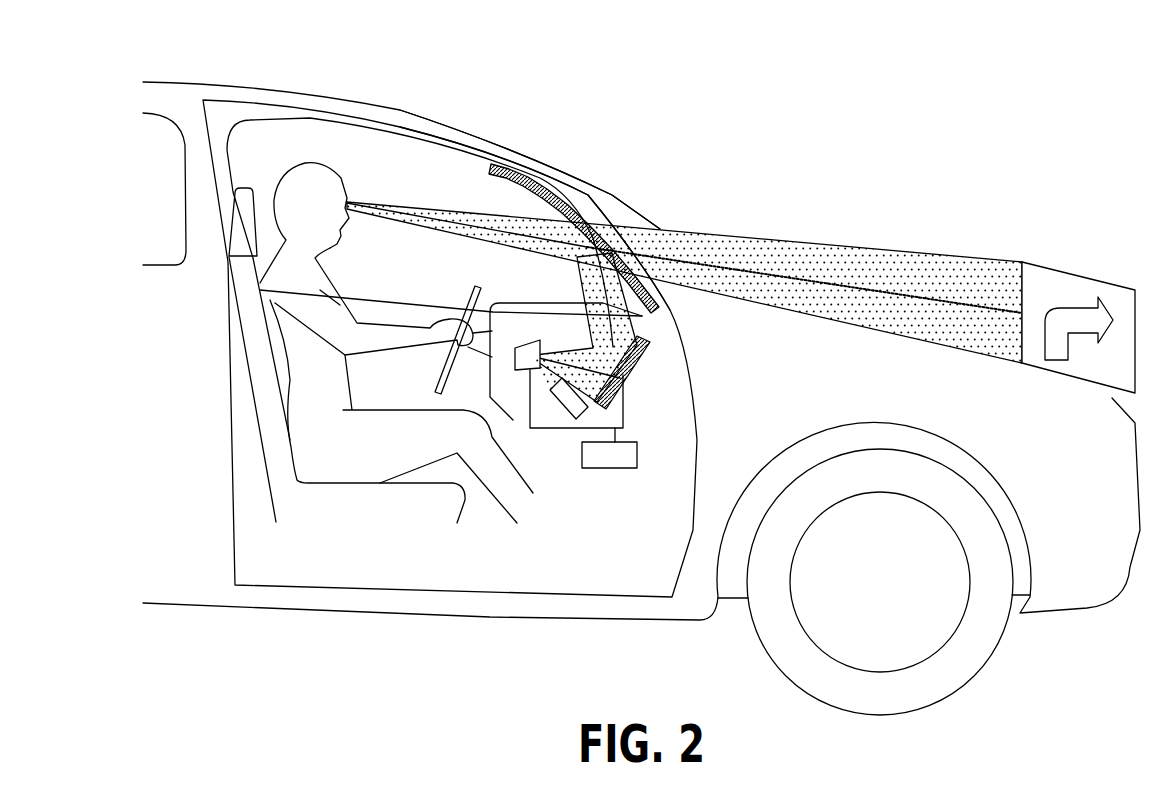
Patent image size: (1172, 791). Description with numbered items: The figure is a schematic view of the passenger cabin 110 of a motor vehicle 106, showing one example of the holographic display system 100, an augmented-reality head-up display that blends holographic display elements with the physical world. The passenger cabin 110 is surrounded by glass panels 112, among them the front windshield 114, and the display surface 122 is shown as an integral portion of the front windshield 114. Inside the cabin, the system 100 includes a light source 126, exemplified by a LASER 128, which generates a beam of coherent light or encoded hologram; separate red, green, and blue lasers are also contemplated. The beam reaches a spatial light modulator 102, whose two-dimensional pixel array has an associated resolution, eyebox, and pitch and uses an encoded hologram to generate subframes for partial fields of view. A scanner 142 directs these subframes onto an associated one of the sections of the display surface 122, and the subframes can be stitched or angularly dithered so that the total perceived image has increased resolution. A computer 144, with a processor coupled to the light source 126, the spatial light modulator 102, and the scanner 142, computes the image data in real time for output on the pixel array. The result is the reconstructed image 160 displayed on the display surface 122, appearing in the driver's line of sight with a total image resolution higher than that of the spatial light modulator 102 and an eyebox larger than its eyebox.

The holographic display system 100 is at (632, 489).
The spatial light modulator 102 is at (533, 336).
The motor vehicle 106 is at (99, 81).
The passenger cabin 110 is at (397, 183).
The glass panels 112 is at (557, 183).
The front windshield 114 is at (535, 210).
The display surface 122 is at (523, 197).
The light source 126 is at (557, 390).
The LASER 128 is at (510, 456).
The scanner 142 is at (653, 357).
The computer 144 is at (600, 468).
The reconstructed image 160 is at (1062, 255).